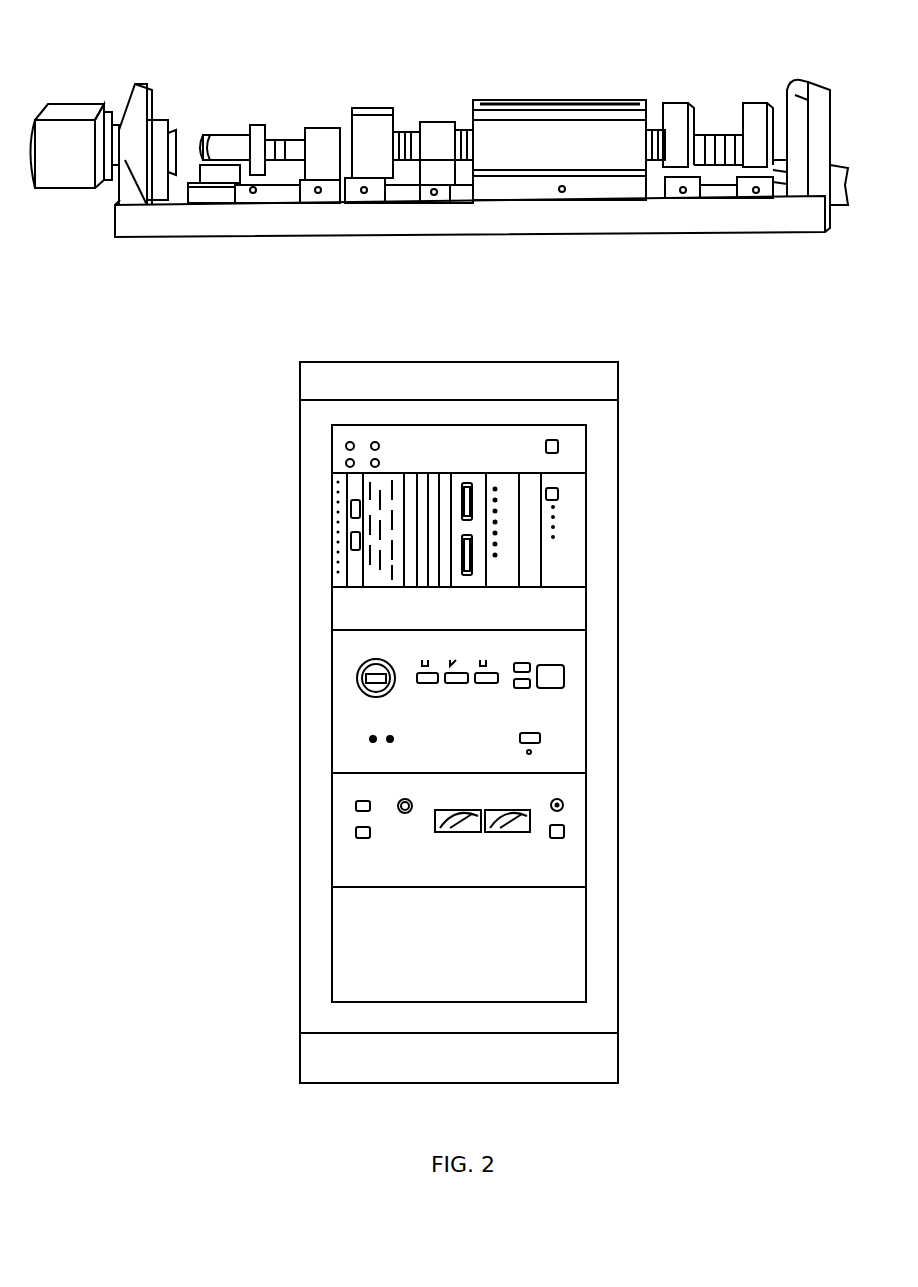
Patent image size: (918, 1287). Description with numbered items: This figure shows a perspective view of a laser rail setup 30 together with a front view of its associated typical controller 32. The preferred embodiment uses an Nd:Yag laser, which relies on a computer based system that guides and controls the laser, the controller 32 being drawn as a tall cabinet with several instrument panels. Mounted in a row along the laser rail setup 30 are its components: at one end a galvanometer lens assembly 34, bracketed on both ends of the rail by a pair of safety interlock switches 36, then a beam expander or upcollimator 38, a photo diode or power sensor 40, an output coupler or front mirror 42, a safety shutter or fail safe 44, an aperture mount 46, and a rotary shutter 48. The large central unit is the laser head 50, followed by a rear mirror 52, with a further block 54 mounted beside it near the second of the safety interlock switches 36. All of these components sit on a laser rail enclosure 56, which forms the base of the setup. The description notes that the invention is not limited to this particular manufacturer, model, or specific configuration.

The laser rail setup 30 is at (473, 236).
The controller 32 is at (641, 683).
The galvanometer lens assembly 34 is at (117, 102).
The safety interlock switches 36 is at (140, 100).
The beam expander 38 is at (205, 127).
The photo diode 40 is at (345, 120).
The output coupler 42 is at (368, 102).
The safety shutter 44 is at (400, 110).
The aperture mount 46 is at (405, 120).
The rotary shutter 48 is at (433, 120).
The laser head 50 is at (647, 93).
The rear mirror 52 is at (722, 97).
The bearing block 54 is at (735, 100).
The laser rail enclosure 56 is at (669, 245).